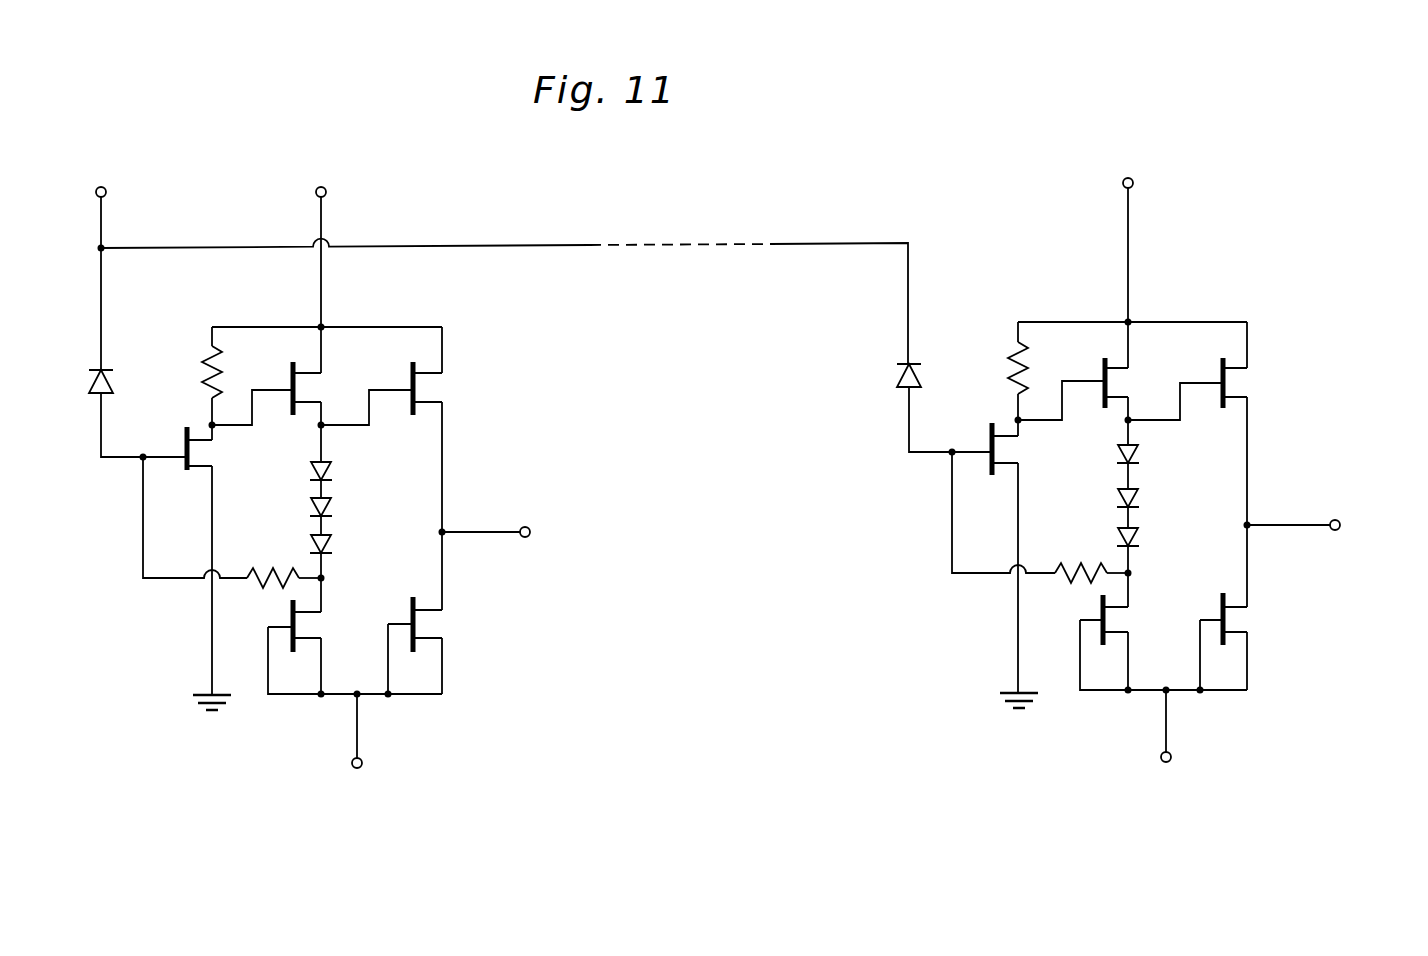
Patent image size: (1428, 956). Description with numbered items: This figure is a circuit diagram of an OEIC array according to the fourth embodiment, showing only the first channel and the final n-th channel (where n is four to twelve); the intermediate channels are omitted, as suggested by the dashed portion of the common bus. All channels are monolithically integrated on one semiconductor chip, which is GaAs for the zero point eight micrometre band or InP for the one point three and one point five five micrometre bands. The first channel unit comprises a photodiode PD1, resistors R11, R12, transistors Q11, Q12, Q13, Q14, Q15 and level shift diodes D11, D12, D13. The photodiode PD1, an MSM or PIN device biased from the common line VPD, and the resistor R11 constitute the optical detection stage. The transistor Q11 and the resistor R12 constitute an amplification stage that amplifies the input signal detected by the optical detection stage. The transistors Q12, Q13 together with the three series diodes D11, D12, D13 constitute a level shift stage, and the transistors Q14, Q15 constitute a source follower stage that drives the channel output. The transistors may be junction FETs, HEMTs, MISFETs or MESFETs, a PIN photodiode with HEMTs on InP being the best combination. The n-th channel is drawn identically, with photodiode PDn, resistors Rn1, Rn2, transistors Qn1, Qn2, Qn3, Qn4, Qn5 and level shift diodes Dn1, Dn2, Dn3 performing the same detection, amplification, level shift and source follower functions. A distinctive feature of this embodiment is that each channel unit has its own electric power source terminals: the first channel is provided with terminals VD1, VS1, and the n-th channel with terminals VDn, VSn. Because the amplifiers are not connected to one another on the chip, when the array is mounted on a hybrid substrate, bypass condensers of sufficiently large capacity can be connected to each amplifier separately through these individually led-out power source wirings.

The photodiode bias terminal VPD is at (102, 264).
The electric power source terminal VD1 is at (325, 265).
The photodiode PD1 is at (109, 414).
The resistor R12 is at (230, 393).
The transistor Q11 is at (217, 561).
The transistor Q12 is at (326, 412).
The transistor Q14 is at (447, 468).
The level shift diode D11 is at (341, 479).
The level shift diode D12 is at (341, 515).
The level shift diode D13 is at (341, 572).
The resistor R11 is at (232, 522).
The transistor Q13 is at (355, 649).
The transistor Q15 is at (433, 647).
The electric power source terminal VS1 is at (362, 747).
The electric power source terminal VDn is at (1132, 259).
The photodiode PDn is at (915, 409).
The resistor Rn2 is at (1036, 389).
The transistor Qn1 is at (1024, 558).
The transistor Qn2 is at (1136, 401).
The transistor Qn4 is at (1254, 464).
The level shift diode Dn1 is at (1150, 467).
The level shift diode Dn2 is at (1150, 507).
The level shift diode Dn3 is at (1150, 566).
The resistor Rn1 is at (1040, 517).
The transistor Qn3 is at (1163, 644).
The transistor Qn5 is at (1241, 643).
The electric power source terminal VSn is at (1169, 743).